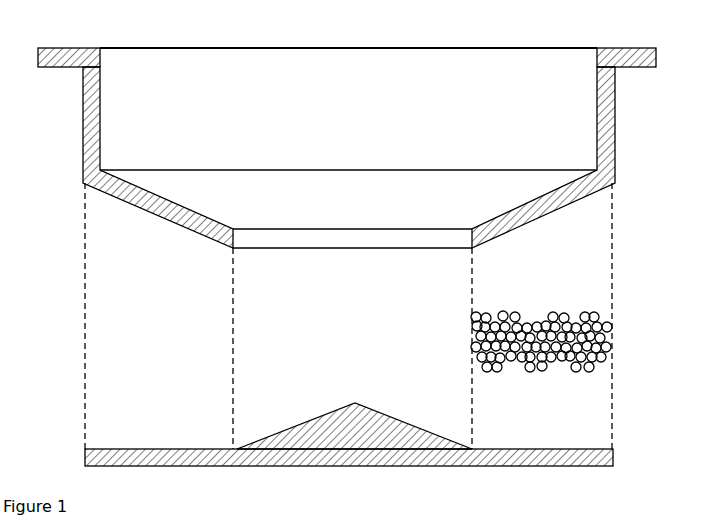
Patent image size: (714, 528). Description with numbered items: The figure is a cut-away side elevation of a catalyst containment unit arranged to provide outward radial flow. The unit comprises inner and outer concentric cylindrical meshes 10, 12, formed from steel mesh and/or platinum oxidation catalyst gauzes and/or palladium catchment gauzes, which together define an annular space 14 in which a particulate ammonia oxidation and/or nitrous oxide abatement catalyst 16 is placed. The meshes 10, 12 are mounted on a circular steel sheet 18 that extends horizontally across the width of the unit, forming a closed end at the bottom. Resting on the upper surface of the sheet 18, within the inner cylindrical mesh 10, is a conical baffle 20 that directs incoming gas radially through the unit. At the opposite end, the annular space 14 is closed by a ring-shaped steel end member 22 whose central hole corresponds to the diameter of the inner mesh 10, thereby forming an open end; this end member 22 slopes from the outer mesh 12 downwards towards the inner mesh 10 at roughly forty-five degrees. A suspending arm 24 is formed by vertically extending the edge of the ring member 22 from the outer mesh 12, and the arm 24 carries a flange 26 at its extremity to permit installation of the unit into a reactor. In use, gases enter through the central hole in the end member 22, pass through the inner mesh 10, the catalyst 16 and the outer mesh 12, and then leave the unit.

The inner cylindrical mesh 10 is at (470, 288).
The outer cylindrical mesh 12 is at (612, 288).
The annular space 14 is at (550, 253).
The particulate catalyst 16 is at (598, 348).
The circular steel sheet 18 is at (595, 453).
The conical baffle 20 is at (347, 412).
The ring-shaped steel end member 22 is at (223, 188).
The suspending arm 24 is at (97, 113).
The flange 26 is at (59, 56).